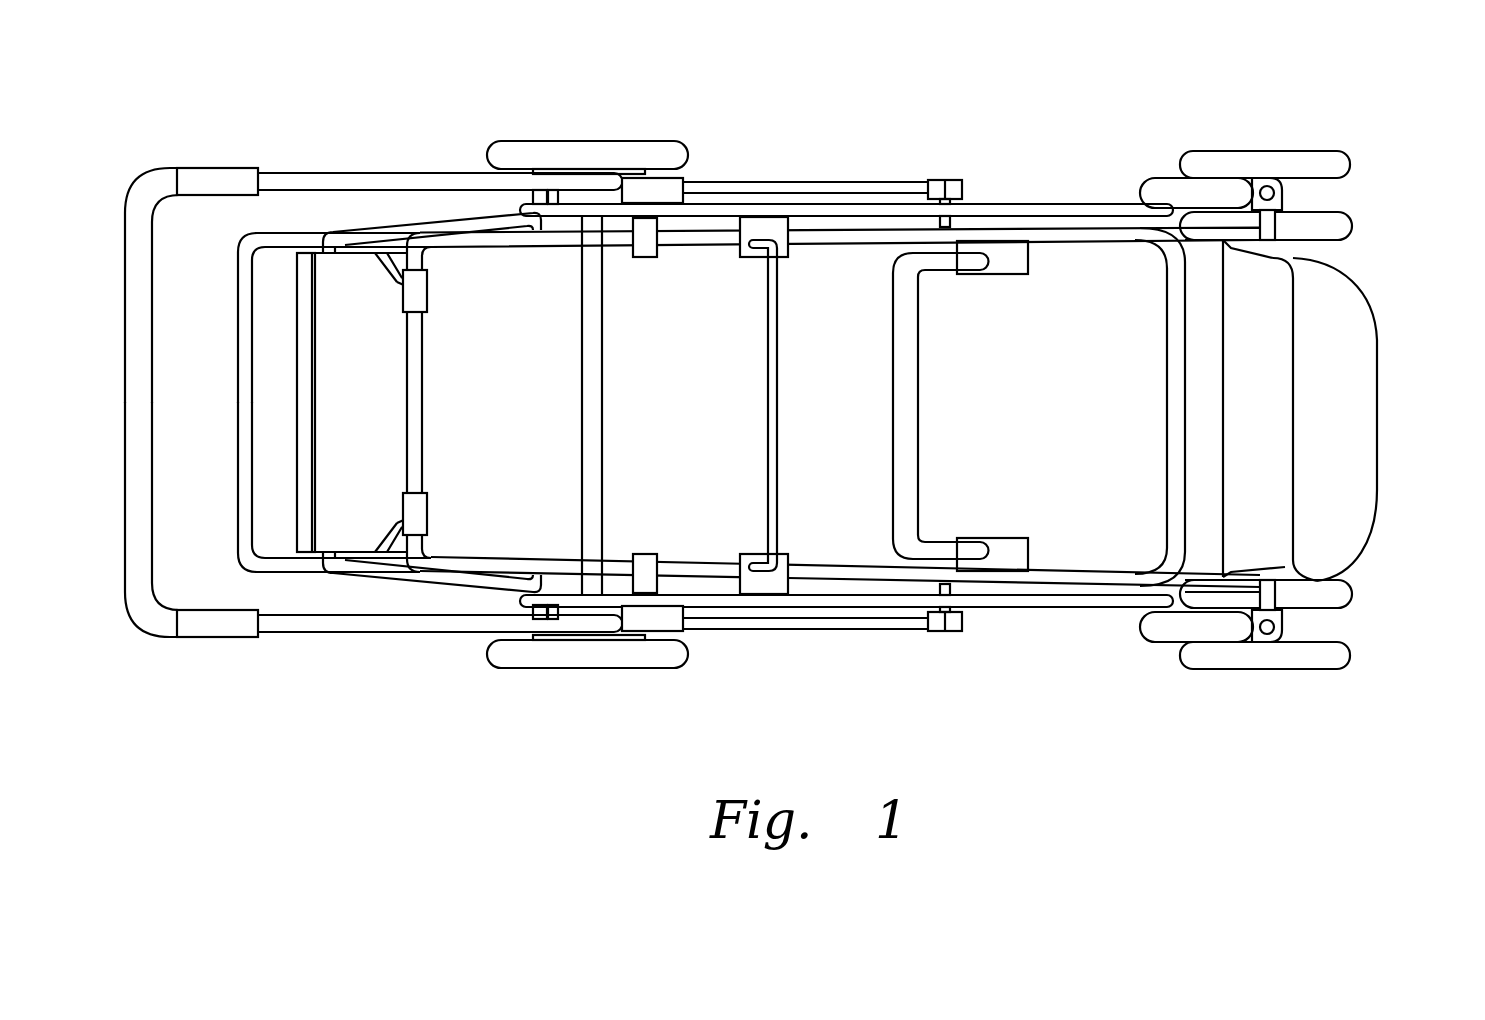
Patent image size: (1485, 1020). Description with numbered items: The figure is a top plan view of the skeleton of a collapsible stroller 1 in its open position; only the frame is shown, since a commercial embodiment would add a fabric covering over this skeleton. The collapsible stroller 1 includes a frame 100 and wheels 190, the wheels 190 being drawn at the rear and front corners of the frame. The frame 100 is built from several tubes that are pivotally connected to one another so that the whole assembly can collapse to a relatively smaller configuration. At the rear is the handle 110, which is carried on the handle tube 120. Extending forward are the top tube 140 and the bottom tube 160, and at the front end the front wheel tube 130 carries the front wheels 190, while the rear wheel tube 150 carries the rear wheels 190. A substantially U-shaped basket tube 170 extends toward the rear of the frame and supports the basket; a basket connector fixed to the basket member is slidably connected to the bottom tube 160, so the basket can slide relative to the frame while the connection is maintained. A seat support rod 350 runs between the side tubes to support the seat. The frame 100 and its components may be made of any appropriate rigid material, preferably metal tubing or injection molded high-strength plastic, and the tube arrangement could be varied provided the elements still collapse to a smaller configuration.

The collapsible stroller 1 is at (1283, 130).
The frame 100 is at (757, 180).
The handle 110 is at (210, 168).
The handle tube 120 is at (377, 170).
The front wheel tube 130 is at (1270, 227).
The top tube 140 is at (1040, 207).
The rear wheel tube 150 is at (883, 180).
The bottom tube 160 is at (1148, 583).
The basket tube 170 is at (273, 572).
The wheels 190 is at (583, 142).
The seat support rod 350 is at (770, 455).